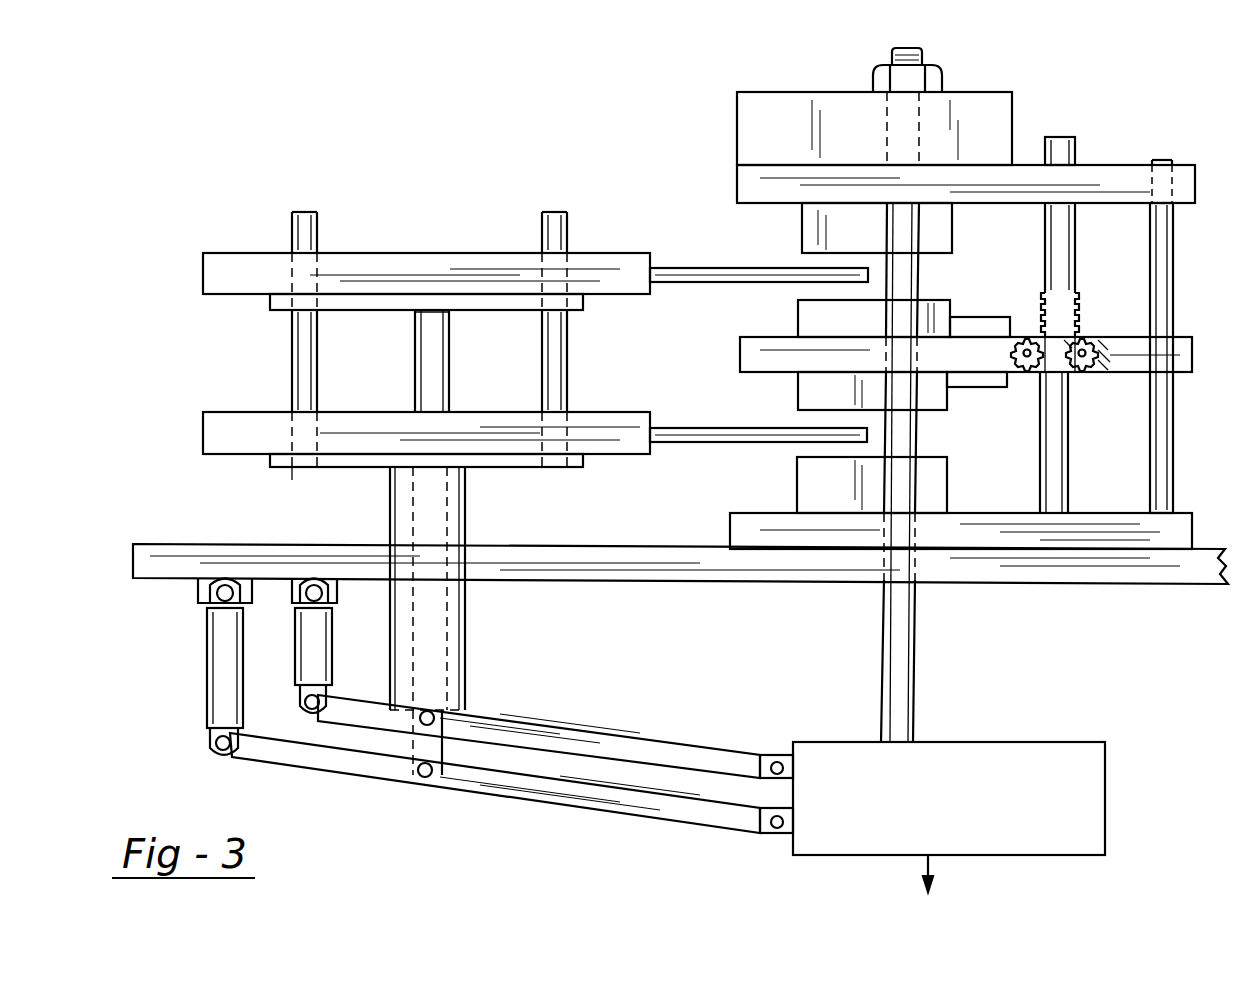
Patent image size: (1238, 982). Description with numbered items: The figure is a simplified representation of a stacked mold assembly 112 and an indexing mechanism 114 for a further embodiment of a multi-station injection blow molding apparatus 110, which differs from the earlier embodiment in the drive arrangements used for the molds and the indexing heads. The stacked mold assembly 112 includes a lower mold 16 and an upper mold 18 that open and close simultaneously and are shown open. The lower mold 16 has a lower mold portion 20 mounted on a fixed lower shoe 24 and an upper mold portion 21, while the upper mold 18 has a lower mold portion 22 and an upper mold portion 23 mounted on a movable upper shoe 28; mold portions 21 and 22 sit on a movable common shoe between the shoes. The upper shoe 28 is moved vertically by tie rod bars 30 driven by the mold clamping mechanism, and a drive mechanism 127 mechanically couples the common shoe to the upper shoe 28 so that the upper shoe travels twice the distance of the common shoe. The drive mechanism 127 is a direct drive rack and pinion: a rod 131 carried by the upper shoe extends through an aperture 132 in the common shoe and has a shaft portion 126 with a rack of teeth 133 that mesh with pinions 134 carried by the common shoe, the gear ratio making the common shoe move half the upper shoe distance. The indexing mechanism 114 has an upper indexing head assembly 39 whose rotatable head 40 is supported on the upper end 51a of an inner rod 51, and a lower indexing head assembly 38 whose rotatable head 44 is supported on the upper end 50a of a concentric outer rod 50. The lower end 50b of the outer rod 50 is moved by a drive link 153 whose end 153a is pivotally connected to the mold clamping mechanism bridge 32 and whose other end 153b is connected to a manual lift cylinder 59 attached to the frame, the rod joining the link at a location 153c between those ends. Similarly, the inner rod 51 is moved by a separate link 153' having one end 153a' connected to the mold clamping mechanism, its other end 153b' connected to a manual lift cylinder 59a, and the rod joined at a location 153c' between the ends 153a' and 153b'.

The stacked mold assembly 112 is at (1032, 623).
The indexing mechanism 114 is at (484, 197).
The rotatable head 40 is at (203, 276).
The upper indexing head assembly 39 is at (603, 242).
The rotatable head 44 is at (203, 434).
The lower indexing head assembly 38 is at (590, 398).
The inner rod 51 is at (450, 388).
The upper end of inner rod 51a is at (415, 320).
The outer rod 50 is at (467, 530).
The upper end of outer rod 50a is at (390, 470).
The lower end of outer rod 50b is at (440, 684).
The movable upper shoe 28 is at (1085, 165).
The tie rod bar 30 is at (920, 54).
The upper mold portion of upper mold 23 is at (802, 228).
The lower mold portion of upper mold 22 is at (798, 322).
The upper mold 18 is at (952, 250).
The upper mold portion of lower mold 21 is at (798, 388).
The lower mold 16 is at (947, 410).
The lower mold portion of lower mold 20 is at (797, 488).
The fixed lower shoe 24 is at (1020, 513).
The rod 131 is at (1043, 215).
The threads 126 is at (1040, 310).
The teeth of rack 133 is at (1043, 257).
The aperture 132 is at (1037, 165).
The drive mechanism 127 is at (1085, 285).
The pinion 134 is at (1027, 368).
The manual lift cylinder 59a is at (207, 683).
The manual lift cylinder 59 is at (295, 672).
The drive link 153 is at (539, 729).
The end of drive link 153b is at (360, 661).
The connection location 153c is at (497, 705).
The end of drive link 153a is at (745, 736).
The link 153' is at (495, 788).
The end of link 153b' is at (279, 782).
The connection location 153c' is at (387, 800).
The end of link 153a' is at (710, 835).
The mold clamping mechanism bridge 32 is at (949, 817).
The injection blow molding apparatus 110 is at (1168, 789).